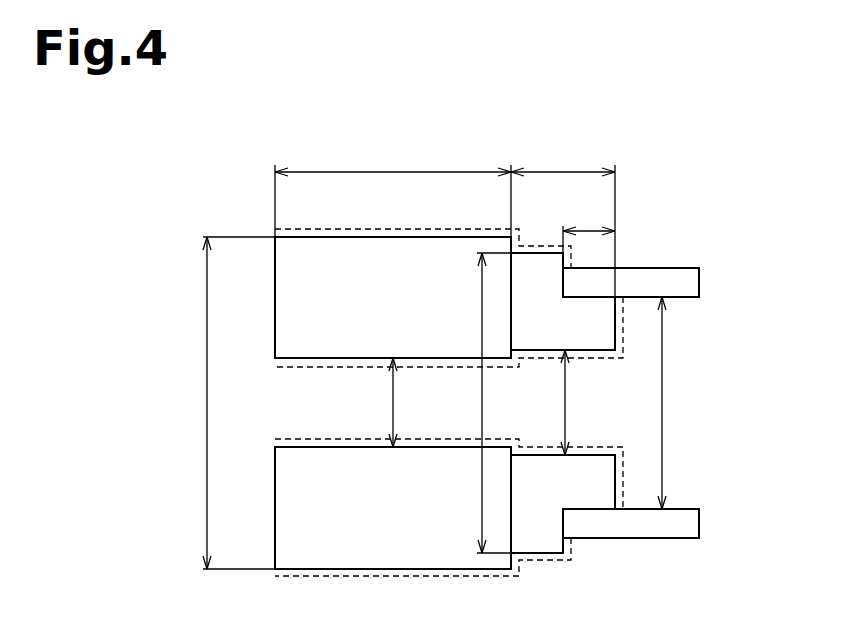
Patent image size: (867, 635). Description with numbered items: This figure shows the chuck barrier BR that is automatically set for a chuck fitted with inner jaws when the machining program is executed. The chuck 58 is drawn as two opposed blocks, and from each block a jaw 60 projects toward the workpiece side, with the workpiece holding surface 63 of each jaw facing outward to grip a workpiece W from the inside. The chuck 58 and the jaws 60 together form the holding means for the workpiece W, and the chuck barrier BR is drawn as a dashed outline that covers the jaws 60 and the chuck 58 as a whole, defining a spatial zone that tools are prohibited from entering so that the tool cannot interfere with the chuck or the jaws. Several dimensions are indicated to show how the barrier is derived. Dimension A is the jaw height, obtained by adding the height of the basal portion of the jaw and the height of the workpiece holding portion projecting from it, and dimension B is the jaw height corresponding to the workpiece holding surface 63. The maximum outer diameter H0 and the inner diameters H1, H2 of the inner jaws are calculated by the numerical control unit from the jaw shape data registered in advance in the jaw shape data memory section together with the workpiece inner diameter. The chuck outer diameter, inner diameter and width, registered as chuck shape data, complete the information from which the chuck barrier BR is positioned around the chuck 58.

The chuck 58 is at (280, 303).
The jaw 60 is at (592, 342).
The workpiece holding surface 63 is at (583, 296).
The chuck barrier BR is at (378, 228).
The workpiece W is at (677, 265).
The jaw height A is at (563, 221).
The jaw height corresponding to the workpiece holding surface B is at (589, 235).
The maximum outer diameter of the inner jaws H0 is at (464, 403).
The inner diameter of the inner jaws H1 is at (645, 403).
The inner diameter of the inner jaws H2 is at (547, 402).